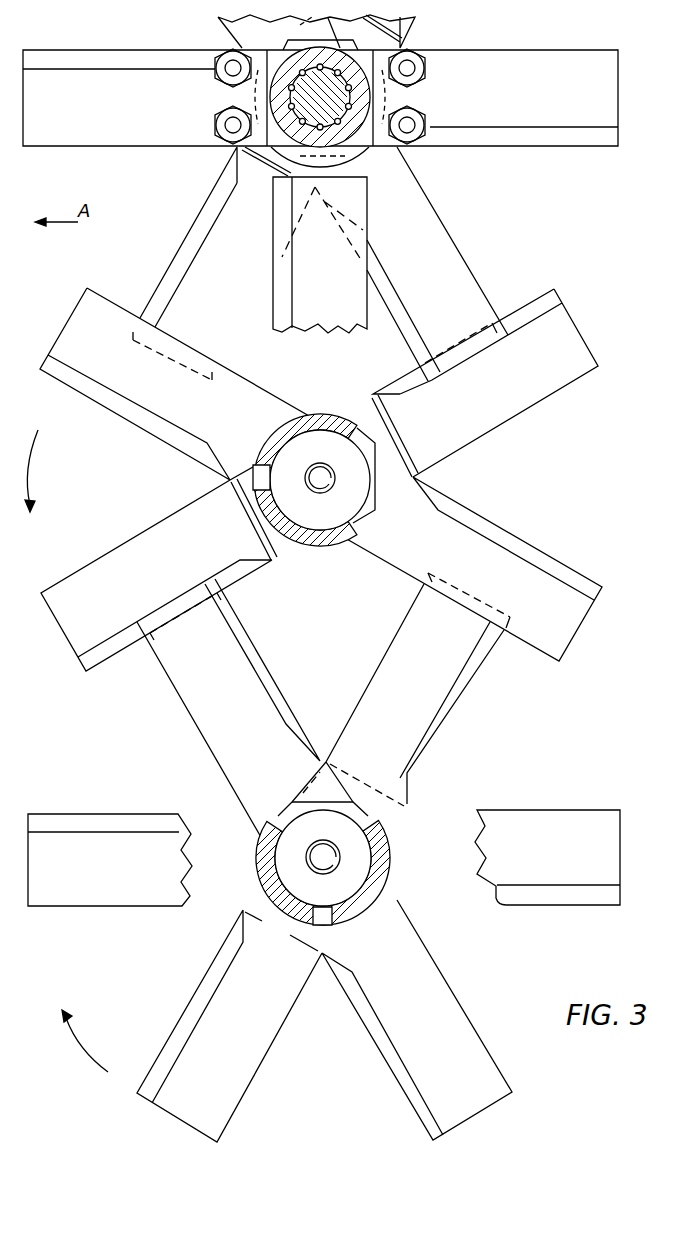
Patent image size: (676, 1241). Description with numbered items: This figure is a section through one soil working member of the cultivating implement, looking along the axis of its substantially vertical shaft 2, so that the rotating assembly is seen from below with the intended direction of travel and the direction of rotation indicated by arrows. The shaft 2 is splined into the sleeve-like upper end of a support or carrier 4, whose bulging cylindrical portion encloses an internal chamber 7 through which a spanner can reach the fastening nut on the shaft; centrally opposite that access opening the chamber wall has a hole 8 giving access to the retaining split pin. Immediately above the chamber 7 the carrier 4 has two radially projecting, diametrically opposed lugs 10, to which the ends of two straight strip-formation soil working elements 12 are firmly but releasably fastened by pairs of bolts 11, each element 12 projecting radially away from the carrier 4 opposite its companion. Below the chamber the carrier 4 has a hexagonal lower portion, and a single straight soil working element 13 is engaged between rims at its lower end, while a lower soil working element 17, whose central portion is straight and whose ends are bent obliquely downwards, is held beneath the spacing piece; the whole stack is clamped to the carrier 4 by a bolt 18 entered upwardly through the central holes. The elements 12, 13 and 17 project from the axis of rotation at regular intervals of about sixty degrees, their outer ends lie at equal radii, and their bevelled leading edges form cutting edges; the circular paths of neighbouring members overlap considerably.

The shaft 2 is at (362, 150).
The support or carrier 4 is at (368, 178).
The internal chamber 7 is at (358, 516).
The hole 8 is at (252, 465).
The lug 10 is at (217, 100).
The bolt 11 is at (215, 80).
The soil working element 12 is at (593, 33).
The soil working element 13 is at (452, 250).
The lower soil working element 17 is at (232, 346).
The bolt 18 is at (333, 478).